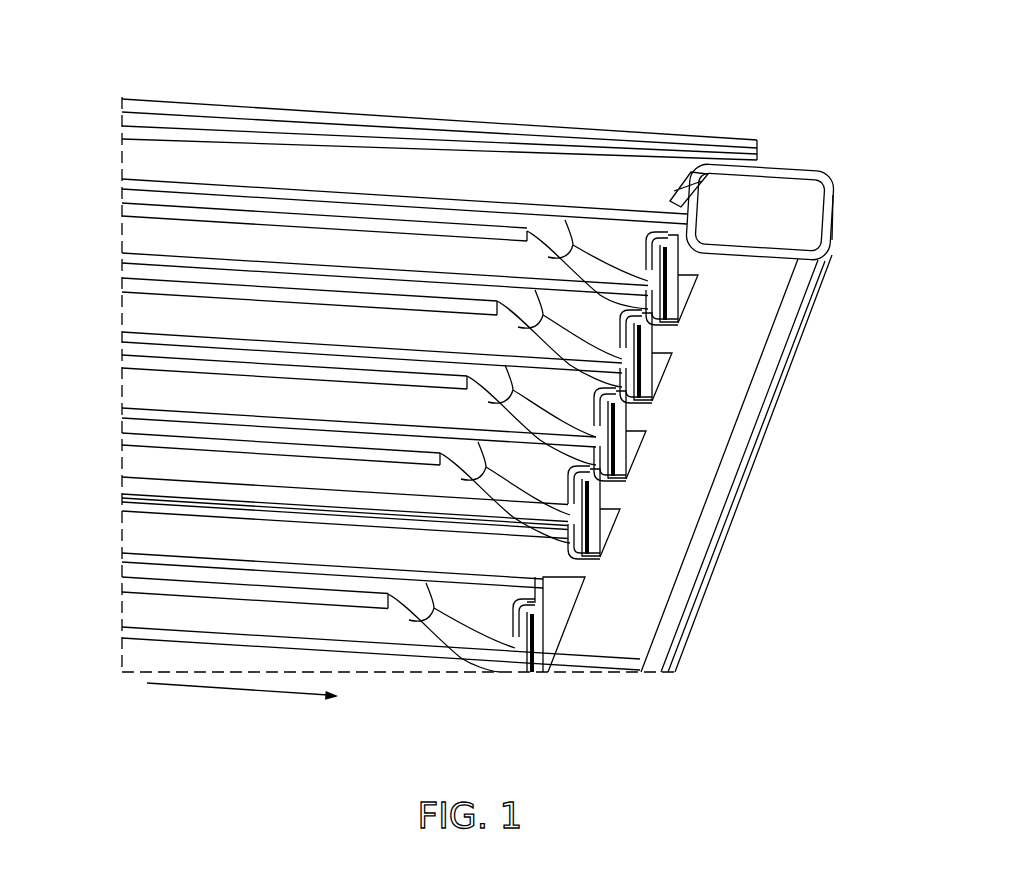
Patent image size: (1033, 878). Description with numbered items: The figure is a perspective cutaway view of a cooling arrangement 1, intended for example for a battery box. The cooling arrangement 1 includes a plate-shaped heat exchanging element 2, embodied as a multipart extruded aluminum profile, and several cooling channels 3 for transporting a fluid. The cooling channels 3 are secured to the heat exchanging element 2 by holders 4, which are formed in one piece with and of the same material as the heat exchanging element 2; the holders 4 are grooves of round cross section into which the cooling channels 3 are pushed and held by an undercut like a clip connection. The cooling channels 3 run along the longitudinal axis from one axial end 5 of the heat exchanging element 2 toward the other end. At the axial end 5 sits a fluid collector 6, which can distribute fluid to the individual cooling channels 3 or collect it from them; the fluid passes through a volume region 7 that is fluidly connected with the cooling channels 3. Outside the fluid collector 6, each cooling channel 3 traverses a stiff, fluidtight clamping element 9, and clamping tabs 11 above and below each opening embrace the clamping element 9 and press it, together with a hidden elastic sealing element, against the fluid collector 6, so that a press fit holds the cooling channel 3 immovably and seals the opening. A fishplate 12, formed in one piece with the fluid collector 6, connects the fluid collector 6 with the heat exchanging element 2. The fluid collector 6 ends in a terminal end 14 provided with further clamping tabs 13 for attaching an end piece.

The cooling arrangement 1 is at (848, 90).
The heat exchanging element 2 is at (262, 165).
The cooling channels 3 is at (578, 255).
The holders 4 is at (128, 194).
The axial end 5 is at (752, 136).
The fluid collector 6 is at (735, 479).
The volume region 7 is at (797, 201).
The clamping element 9 is at (684, 323).
The clamping tabs 11 is at (650, 395).
The fishplate 12 is at (472, 508).
The further clamping tabs 13 is at (686, 172).
The terminal end 14 is at (850, 215).